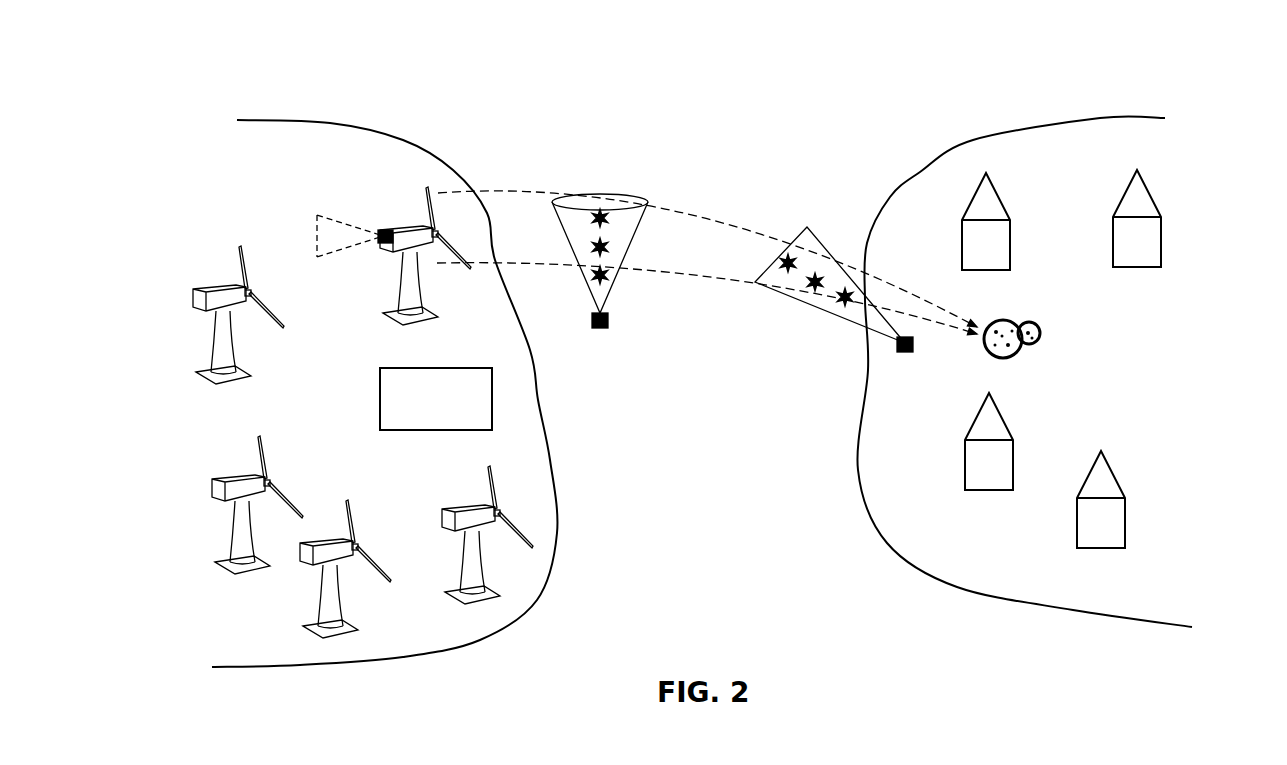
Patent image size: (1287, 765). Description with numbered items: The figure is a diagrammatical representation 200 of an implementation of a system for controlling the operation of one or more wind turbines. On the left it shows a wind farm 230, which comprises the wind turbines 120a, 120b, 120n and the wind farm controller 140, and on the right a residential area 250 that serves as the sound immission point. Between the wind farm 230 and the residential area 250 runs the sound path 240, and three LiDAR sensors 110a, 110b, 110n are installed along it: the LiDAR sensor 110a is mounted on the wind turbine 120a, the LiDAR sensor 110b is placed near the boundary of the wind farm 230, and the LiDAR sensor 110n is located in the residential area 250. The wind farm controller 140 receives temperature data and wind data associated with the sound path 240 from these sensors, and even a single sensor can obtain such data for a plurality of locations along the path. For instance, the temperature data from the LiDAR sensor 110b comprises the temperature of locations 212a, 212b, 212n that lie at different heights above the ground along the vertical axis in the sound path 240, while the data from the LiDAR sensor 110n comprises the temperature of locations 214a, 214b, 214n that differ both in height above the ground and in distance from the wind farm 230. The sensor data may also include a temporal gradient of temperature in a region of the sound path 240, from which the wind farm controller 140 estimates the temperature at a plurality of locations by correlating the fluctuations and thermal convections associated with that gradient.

The diagrammatical representation 200 is at (1168, 65).
The wind farm 230 is at (288, 137).
The residential area 250 is at (920, 197).
The sound path 240 is at (733, 277).
The LiDAR sensor 110a is at (386, 230).
The LiDAR sensor 110b is at (602, 329).
The LiDAR sensor 110n is at (913, 347).
The wind turbine 120a is at (402, 290).
The wind turbine 120b is at (232, 543).
The wind turbine 120n is at (460, 572).
The wind farm controller 140 is at (380, 398).
The location 212a is at (608, 216).
The location 212b is at (608, 247).
The location 212n is at (606, 281).
The location 214a is at (784, 270).
The location 214b is at (812, 289).
The location 214n is at (845, 304).